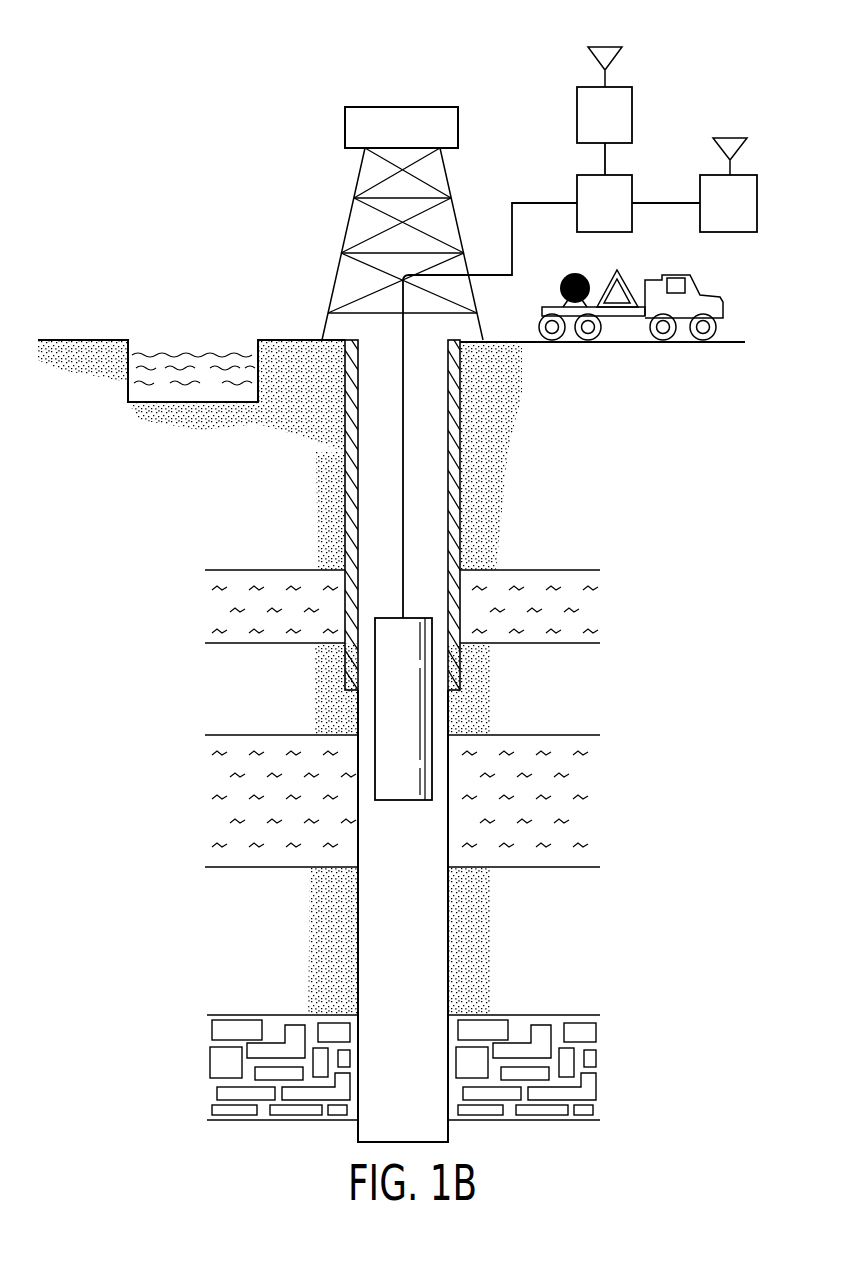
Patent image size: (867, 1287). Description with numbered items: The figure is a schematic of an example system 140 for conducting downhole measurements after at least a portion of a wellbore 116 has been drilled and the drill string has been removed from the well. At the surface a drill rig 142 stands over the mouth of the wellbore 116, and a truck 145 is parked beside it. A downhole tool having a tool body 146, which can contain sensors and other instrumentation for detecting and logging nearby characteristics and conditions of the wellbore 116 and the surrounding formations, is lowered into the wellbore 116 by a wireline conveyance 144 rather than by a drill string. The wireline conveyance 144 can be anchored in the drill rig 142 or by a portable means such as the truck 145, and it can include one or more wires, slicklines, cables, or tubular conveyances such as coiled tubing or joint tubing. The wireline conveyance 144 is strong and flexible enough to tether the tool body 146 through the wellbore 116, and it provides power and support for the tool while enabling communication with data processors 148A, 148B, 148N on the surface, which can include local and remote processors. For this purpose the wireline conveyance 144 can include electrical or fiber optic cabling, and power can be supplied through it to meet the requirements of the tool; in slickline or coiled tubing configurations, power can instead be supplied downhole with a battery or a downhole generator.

The system 140 is at (256, 143).
The drill rig 142 is at (465, 155).
The wireline conveyance 144 is at (400, 278).
The truck 145 is at (548, 290).
The tool body 146 is at (388, 697).
The data processor 148A is at (577, 92).
The data processor 148B is at (630, 174).
The data processor 148N is at (730, 232).
The wellbore 116 is at (444, 938).